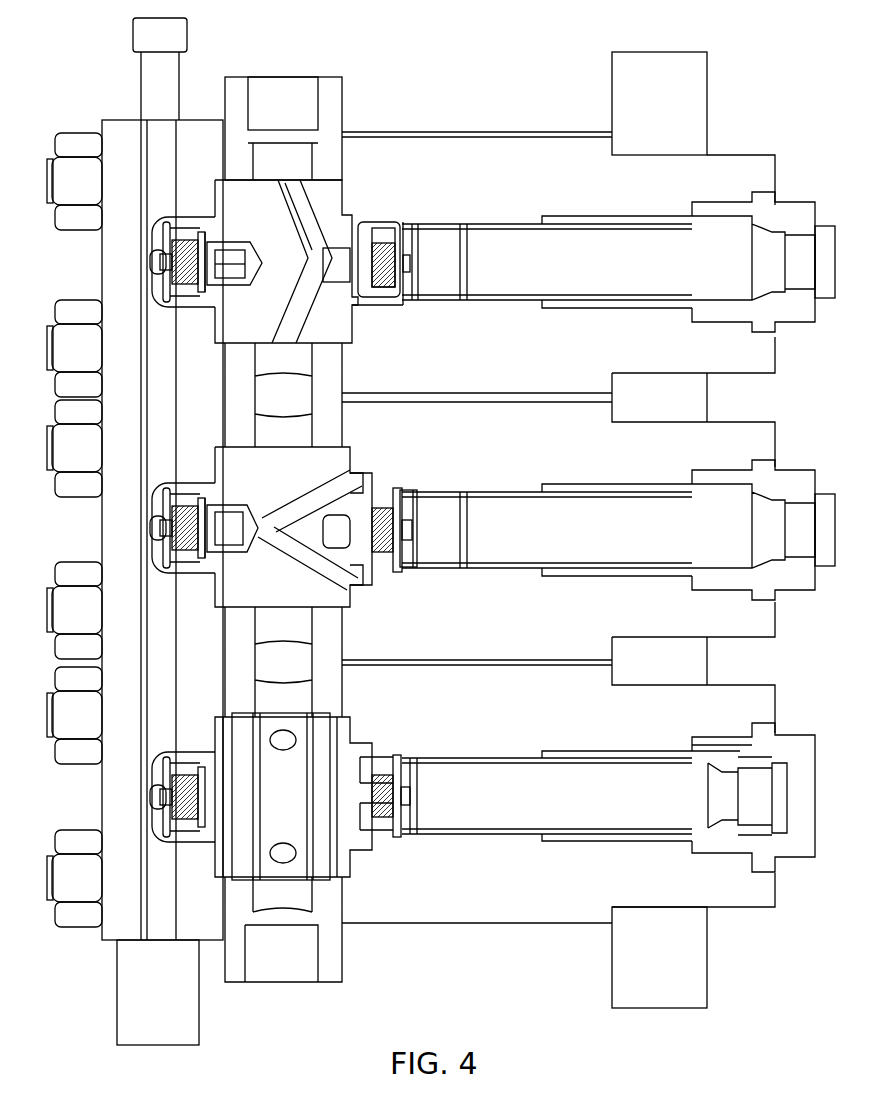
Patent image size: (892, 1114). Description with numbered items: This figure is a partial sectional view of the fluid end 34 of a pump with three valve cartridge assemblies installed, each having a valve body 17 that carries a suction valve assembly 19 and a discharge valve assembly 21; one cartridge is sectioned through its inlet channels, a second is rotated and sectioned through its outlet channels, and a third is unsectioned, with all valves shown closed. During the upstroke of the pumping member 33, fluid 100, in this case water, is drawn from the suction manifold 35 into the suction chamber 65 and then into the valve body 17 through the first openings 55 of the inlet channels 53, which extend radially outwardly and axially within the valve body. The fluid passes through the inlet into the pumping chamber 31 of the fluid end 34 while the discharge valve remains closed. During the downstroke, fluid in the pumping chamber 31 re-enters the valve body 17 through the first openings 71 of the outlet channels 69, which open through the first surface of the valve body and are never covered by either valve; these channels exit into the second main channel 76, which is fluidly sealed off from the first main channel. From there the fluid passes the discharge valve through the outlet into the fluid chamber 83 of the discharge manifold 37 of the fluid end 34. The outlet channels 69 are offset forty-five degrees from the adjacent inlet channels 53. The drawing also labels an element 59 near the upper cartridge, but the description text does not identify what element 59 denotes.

The valve body 17 is at (318, 858).
The suction valve assembly 19 is at (416, 505).
The discharge valve assembly 21 is at (154, 233).
The pumping chamber 31 is at (414, 304).
The pumping member 33 is at (656, 228).
The fluid end 34 is at (524, 940).
The suction manifold 35 is at (240, 77).
The discharge manifold 37 is at (127, 120).
The inlet channels 53 is at (322, 205).
The first opening 55 is at (283, 730).
The pivot member 59 is at (347, 232).
The suction chamber 65 is at (333, 176).
The outlet channels 69 is at (267, 566).
The first opening 71 is at (354, 473).
The second main channel 76 is at (220, 214).
The fluid chamber 83 is at (157, 250).
The fluid 100 is at (298, 222).